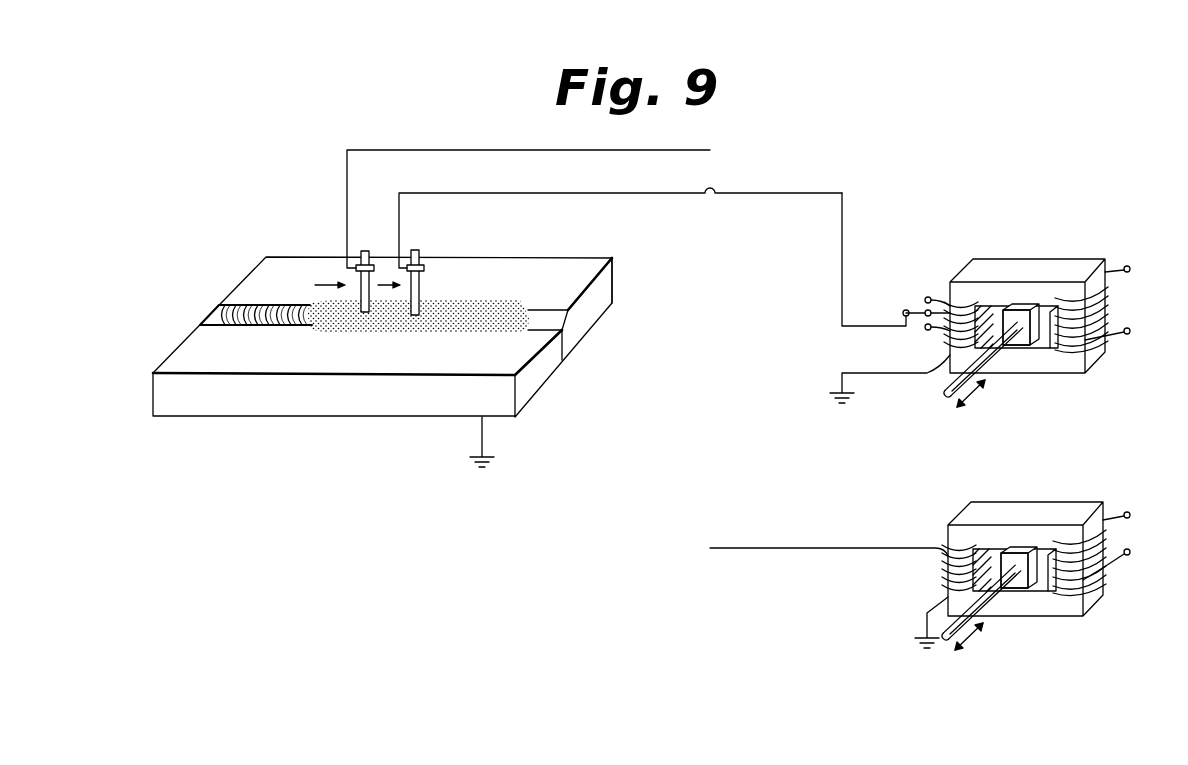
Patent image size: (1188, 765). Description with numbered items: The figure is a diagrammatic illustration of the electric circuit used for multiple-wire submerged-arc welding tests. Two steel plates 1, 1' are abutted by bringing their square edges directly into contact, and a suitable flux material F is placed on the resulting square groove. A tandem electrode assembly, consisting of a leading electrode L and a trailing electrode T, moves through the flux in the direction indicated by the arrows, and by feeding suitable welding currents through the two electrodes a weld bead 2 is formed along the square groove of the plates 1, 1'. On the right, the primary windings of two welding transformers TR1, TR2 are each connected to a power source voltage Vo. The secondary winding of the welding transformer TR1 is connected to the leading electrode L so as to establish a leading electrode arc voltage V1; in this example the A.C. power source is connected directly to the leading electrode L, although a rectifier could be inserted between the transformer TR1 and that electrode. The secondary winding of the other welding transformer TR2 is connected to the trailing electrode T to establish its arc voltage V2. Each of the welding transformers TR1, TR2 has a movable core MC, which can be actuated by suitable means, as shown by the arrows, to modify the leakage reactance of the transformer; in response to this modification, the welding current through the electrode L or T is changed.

The steel plate 1 is at (382, 362).
The steel plate 1' is at (616, 289).
The weld bead 2 is at (220, 305).
The flux material F is at (505, 306).
The trailing electrode T is at (362, 312).
The leading electrode arc voltage V1 is at (406, 250).
The trailing electrode arc voltage V2 is at (352, 273).
The leading electrode L is at (417, 287).
The welding transformer TR1 is at (1072, 217).
The welding transformer TR2 is at (1078, 472).
The movable core MC is at (1037, 332).
The power source voltage Vo is at (1124, 423).